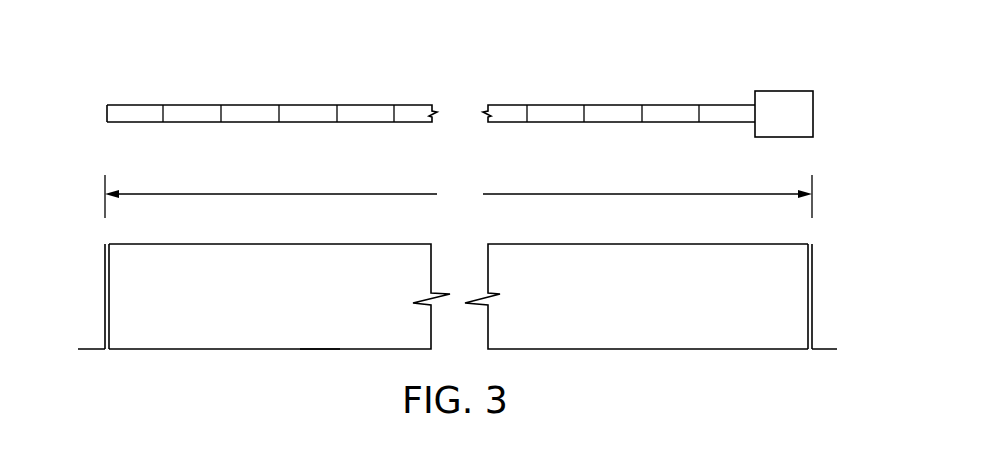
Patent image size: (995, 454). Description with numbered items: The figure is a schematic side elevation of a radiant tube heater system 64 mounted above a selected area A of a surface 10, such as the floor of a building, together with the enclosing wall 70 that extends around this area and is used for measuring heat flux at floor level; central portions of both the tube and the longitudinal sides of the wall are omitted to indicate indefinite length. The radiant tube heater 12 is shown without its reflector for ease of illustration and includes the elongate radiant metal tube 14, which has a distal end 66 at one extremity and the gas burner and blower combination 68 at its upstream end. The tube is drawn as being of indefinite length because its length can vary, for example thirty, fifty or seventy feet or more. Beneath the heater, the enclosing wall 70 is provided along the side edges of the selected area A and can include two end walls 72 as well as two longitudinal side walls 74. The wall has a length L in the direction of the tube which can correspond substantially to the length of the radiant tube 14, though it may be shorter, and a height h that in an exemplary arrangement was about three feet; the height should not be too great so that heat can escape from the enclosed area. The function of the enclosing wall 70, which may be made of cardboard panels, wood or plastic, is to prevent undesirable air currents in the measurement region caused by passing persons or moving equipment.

The surface 10 is at (256, 349).
The radiant tube heater 12 is at (565, 105).
The radiant tube 14 is at (341, 112).
The radiant tube heater system 64 is at (666, 90).
The distal end 66 is at (107, 113).
The gas burner and blower combination 68 is at (762, 97).
The enclosing wall 70 is at (190, 270).
The end walls 72 is at (105, 310).
The longitudinal side walls 74 is at (565, 266).
The selected area A is at (322, 349).
The height h is at (700, 297).
The length L is at (458, 196).